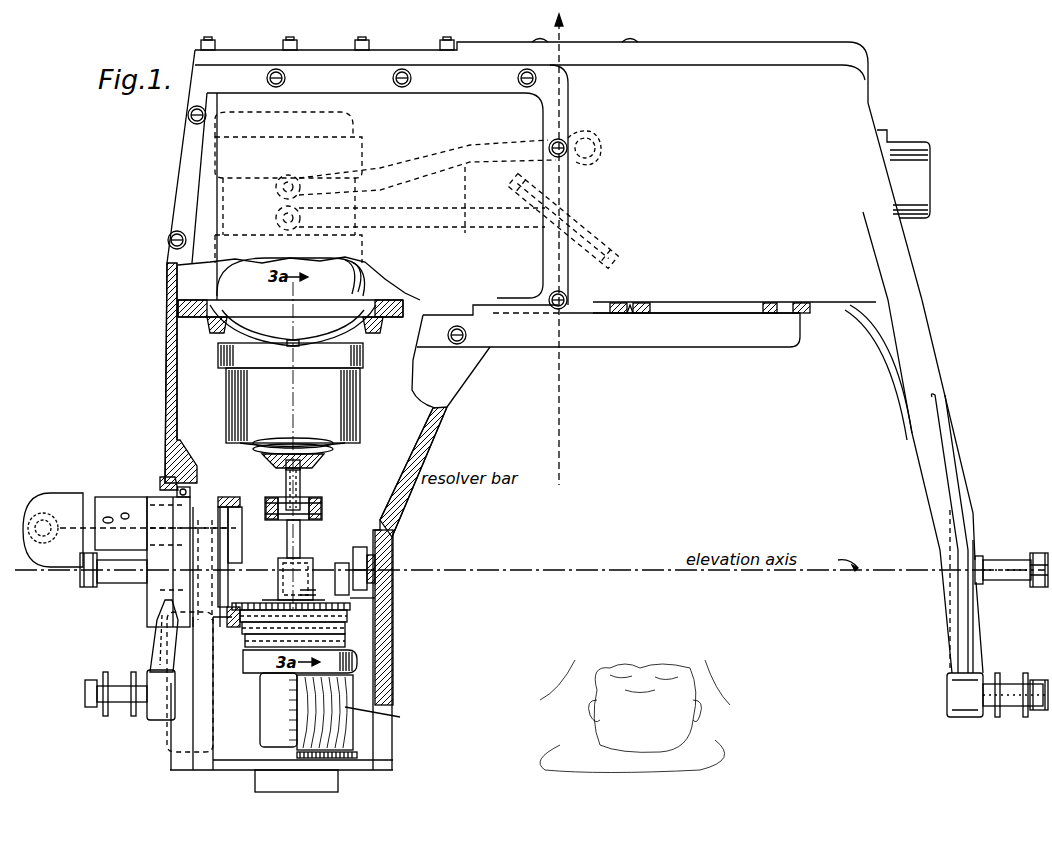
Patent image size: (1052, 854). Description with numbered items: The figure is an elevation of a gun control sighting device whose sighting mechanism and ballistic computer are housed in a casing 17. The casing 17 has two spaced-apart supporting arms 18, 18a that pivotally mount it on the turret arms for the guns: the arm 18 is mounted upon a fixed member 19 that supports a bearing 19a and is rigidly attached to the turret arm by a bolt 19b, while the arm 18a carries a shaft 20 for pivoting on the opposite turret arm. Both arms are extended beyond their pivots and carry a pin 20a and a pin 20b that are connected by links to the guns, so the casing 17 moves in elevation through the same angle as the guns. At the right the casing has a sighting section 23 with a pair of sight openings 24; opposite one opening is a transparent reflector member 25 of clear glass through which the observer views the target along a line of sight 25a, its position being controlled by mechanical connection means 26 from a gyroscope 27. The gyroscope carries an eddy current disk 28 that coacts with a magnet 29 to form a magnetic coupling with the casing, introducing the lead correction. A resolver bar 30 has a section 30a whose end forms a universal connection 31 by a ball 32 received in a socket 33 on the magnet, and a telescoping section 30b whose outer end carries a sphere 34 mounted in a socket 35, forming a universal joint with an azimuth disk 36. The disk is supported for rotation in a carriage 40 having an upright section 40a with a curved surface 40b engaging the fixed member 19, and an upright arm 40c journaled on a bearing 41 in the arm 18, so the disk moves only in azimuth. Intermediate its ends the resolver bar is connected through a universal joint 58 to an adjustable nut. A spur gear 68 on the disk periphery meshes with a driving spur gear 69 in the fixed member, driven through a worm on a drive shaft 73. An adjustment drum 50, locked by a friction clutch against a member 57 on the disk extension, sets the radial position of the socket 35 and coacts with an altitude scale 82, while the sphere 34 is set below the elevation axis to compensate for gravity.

The casing 17 is at (857, 108).
The supporting arm 18 is at (168, 407).
The supporting arm 18a is at (953, 492).
The fixed member 19 is at (150, 502).
The bearing 19a is at (176, 482).
The bolt 19b is at (110, 585).
The shaft 20 is at (999, 582).
The pin 20a is at (1014, 705).
The pin 20b is at (125, 706).
The sighting section 23 is at (784, 298).
The sight openings 24 is at (640, 318).
The transparent reflector member 25 is at (587, 235).
The line of sight 25a is at (563, 110).
The mechanical connection means 26 is at (483, 228).
The gyroscope 27 is at (362, 270).
The eddy current disk 28 is at (268, 327).
The magnet 29 is at (236, 395).
The resolver bar 30 is at (303, 478).
The section of resolver bar 30a is at (322, 463).
The section of resolver bar 30b is at (300, 543).
The universal connection 31 is at (272, 460).
The ball 32 is at (293, 436).
The socket 33 is at (262, 450).
The sphere 34 is at (318, 560).
The socket 35 is at (306, 589).
The azimuth disk 36 is at (276, 600).
The carriage 40 is at (234, 668).
The upright section 40a is at (233, 498).
The curved surface 40b is at (220, 645).
The upright arm 40c is at (372, 597).
The bearing 41 is at (373, 561).
The adjustment drum 50 is at (357, 728).
The member 57 is at (358, 661).
The universal joint 58 is at (268, 503).
The spur gear 68 is at (352, 605).
The driving spur gear 69 is at (148, 630).
The drive shaft 73 is at (83, 523).
The altitude scale 82 is at (274, 744).